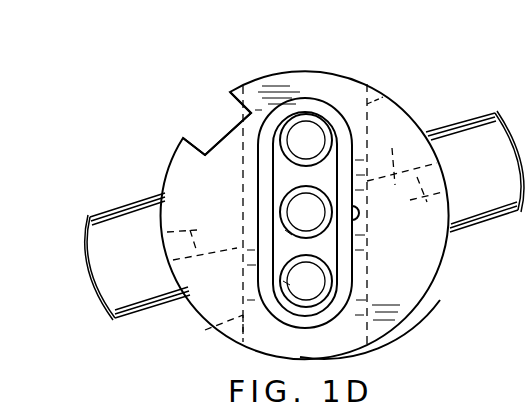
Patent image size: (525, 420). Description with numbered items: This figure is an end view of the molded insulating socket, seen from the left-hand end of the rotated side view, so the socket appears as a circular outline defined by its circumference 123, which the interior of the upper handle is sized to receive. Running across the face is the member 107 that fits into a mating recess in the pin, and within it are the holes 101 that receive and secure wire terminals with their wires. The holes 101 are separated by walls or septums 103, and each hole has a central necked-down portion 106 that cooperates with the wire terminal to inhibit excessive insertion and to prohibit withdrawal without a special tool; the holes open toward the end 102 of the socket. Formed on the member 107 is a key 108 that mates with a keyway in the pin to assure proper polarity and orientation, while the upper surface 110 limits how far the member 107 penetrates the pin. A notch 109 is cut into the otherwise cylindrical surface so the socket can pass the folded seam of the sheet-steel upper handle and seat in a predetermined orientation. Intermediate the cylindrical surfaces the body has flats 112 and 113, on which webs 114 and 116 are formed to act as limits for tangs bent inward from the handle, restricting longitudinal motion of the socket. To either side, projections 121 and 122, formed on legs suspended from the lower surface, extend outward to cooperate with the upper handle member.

The holes 101 is at (318, 148).
The end of the socket 102 is at (323, 108).
The septums 103 is at (300, 177).
The central necked-down portion 106 is at (283, 153).
The member 107 is at (353, 273).
The key 108 is at (362, 215).
The notch 109 is at (222, 128).
The upper surface 110 is at (403, 300).
The flat 112 is at (388, 98).
The flat 113 is at (217, 327).
The web 114 is at (405, 163).
The web 116 is at (225, 222).
The projection 121 is at (487, 169).
The projection 122 is at (143, 264).
The circumference 123 is at (417, 312).